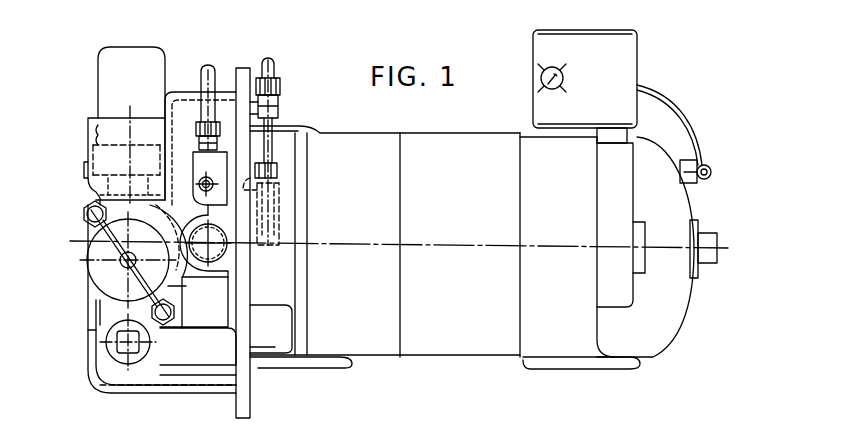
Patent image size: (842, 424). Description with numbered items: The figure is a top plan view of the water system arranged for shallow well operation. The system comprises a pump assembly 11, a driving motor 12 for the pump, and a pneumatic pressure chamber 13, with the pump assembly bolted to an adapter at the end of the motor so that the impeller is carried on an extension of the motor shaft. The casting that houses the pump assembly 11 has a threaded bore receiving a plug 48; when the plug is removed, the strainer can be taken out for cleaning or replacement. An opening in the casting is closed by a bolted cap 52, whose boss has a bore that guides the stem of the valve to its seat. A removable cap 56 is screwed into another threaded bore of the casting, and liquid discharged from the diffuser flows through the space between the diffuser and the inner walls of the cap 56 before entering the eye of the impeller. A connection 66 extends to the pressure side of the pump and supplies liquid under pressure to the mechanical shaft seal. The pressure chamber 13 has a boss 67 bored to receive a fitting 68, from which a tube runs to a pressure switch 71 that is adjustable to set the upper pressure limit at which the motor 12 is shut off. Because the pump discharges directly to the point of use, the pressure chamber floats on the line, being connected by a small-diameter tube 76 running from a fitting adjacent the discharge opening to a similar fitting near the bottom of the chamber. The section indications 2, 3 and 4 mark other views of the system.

The section line 2- 2 is at (67, 236).
The mounting plate / view 3 is at (227, 245).
The view 4 is at (127, 413).
The pump assembly 11 is at (181, 72).
The driving motor 12 is at (445, 247).
The pneumatic pressure chamber 13 is at (668, 317).
The plug 48 is at (118, 345).
The cap 52 is at (110, 270).
The removable cap 56 is at (108, 87).
The connection 66 is at (272, 126).
The boss 67 is at (697, 183).
The fitting 68 is at (712, 170).
The pressure switch 71 is at (637, 56).
The tube 76 is at (210, 78).